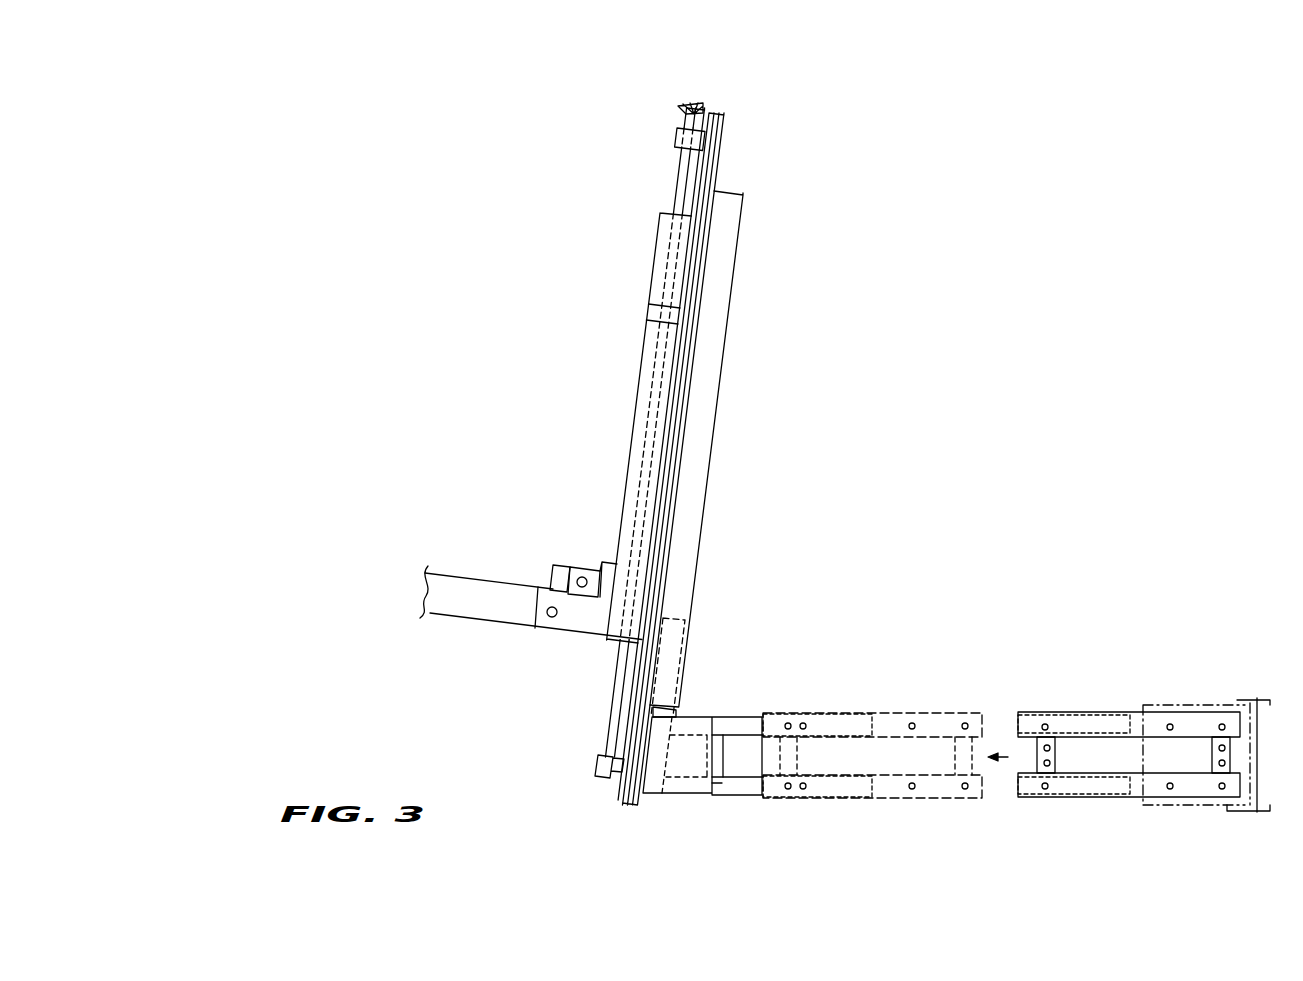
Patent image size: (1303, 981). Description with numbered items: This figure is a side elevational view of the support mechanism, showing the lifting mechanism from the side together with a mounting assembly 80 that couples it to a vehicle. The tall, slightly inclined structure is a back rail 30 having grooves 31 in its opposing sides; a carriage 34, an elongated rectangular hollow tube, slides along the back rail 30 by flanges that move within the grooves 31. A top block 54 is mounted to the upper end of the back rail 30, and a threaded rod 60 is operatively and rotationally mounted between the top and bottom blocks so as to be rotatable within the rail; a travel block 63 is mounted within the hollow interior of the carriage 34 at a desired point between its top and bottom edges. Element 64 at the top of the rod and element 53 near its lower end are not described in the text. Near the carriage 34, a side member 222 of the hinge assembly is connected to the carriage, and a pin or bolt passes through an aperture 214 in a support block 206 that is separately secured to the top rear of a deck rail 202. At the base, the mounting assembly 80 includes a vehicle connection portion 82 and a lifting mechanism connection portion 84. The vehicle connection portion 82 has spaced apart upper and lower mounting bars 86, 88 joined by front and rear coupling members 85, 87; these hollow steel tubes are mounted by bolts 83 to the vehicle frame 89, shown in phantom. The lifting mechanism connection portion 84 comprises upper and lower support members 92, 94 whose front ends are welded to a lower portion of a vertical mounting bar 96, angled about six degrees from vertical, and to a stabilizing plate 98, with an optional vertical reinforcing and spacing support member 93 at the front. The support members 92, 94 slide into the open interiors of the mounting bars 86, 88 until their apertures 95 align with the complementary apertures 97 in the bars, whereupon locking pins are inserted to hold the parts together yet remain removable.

The back rail 30 is at (726, 380).
The grooves 31 is at (716, 115).
The carriage 34 is at (620, 488).
The lower bracket 53 is at (598, 762).
The top block 54 is at (677, 137).
The threaded rod 60 is at (678, 181).
The travel block 63 is at (650, 313).
The cap 64 is at (689, 102).
The mounting assembly 80 is at (864, 627).
The vehicle connection portion 82 is at (1093, 704).
The bolts 83 is at (1222, 789).
The lifting mechanism connection portion 84 is at (723, 701).
The front coupling member 85 is at (1053, 752).
The upper mounting bar 86 is at (1186, 705).
The rear coupling member 87 is at (1213, 752).
The lower mounting bar 88 is at (1080, 797).
The vehicle frame 89 is at (1230, 812).
The upper support member 92 is at (749, 714).
The vertical reinforcing and spacing support member 93 is at (723, 757).
The lower support member 94 is at (752, 796).
The apertures 95 is at (804, 789).
The vertical mounting bar 96 is at (688, 633).
The apertures 97 is at (1045, 725).
The stabilizing plate 98 is at (716, 796).
The deck rail 202 is at (452, 606).
The support block 206 is at (567, 563).
The aperture 214 is at (566, 576).
The side member 222 is at (581, 623).